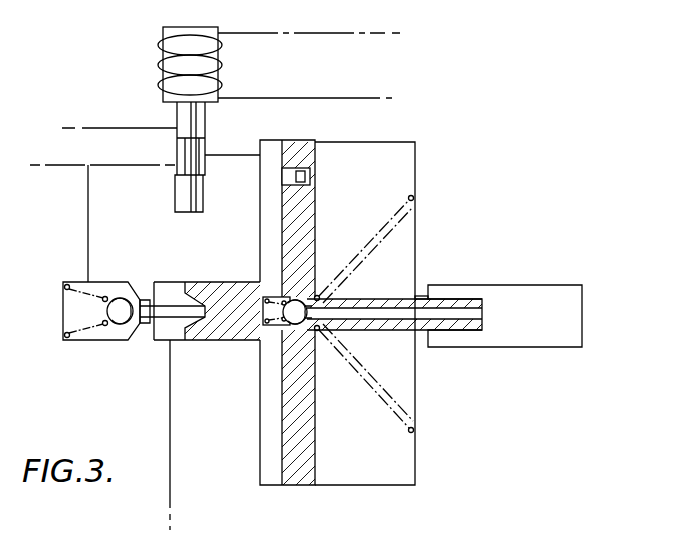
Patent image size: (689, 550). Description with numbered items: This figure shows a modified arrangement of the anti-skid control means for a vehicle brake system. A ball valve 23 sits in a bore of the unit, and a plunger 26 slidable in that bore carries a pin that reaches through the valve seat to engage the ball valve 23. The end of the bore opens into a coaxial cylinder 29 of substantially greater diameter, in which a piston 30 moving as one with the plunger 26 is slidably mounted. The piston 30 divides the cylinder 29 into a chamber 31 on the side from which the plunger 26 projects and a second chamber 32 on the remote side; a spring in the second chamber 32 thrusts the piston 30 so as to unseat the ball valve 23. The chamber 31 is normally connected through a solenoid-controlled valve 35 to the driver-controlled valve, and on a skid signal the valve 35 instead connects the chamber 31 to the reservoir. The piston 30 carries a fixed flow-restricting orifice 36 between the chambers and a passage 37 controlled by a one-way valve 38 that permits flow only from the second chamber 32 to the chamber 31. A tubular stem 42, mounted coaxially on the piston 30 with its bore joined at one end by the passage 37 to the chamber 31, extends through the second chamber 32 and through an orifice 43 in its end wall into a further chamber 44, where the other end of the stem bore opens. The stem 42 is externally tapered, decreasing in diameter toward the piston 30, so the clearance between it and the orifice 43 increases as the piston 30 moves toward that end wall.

The ball valve 23 is at (118, 313).
The plunger 26 is at (220, 296).
The cylinder 29 is at (360, 142).
The piston 30 is at (297, 456).
The chamber 31 is at (275, 232).
The second chamber 32 is at (398, 456).
The valve 35 is at (192, 128).
The orifice 36 is at (300, 168).
The passage 37 is at (268, 298).
The one-way valve 38 is at (283, 343).
The tubular stem 42 is at (395, 330).
The orifice 43 is at (420, 296).
The further chamber 44 is at (528, 285).